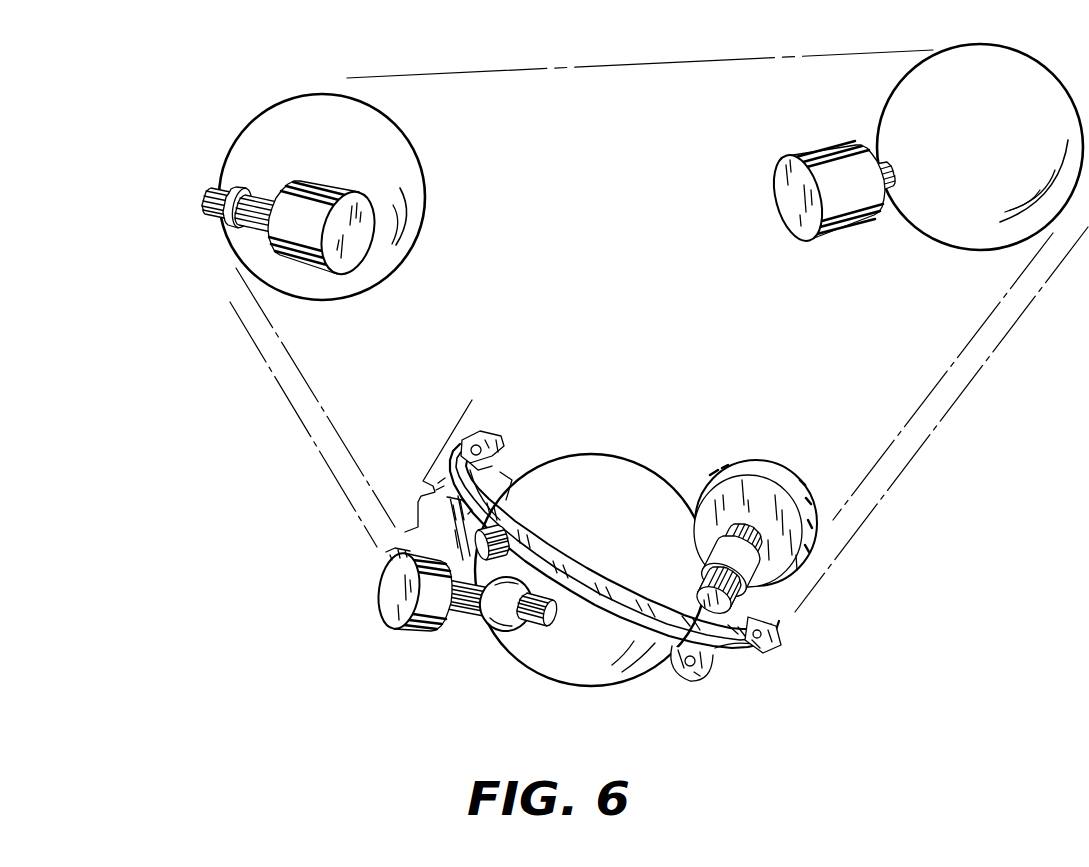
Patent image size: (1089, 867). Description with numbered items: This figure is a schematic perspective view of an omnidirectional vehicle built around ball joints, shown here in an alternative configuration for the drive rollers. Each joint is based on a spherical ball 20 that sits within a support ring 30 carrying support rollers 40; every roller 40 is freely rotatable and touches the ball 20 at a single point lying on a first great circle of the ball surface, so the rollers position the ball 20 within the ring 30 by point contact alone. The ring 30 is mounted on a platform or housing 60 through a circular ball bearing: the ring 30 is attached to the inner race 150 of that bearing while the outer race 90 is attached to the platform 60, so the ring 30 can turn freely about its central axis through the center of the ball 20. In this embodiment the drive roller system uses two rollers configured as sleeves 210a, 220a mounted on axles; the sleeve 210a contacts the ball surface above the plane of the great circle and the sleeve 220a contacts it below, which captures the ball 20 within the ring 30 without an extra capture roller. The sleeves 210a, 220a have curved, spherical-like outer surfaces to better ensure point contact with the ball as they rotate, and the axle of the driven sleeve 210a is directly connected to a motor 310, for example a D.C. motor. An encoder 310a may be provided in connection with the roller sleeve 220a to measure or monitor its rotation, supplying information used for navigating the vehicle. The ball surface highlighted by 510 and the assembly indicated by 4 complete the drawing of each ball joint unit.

The ball joint assembly 4 is at (683, 684).
The spherical ball 20 is at (336, 139).
The support ring 30 is at (600, 511).
The support rollers 40 is at (707, 674).
The platform 60 is at (600, 146).
The outer race 90 is at (773, 643).
The inner race 150 is at (492, 440).
The sleeve 210a is at (240, 232).
The sleeve 220a is at (467, 613).
The motor 310 is at (357, 268).
The encoder 310a is at (380, 592).
The ball surface 510 is at (328, 302).